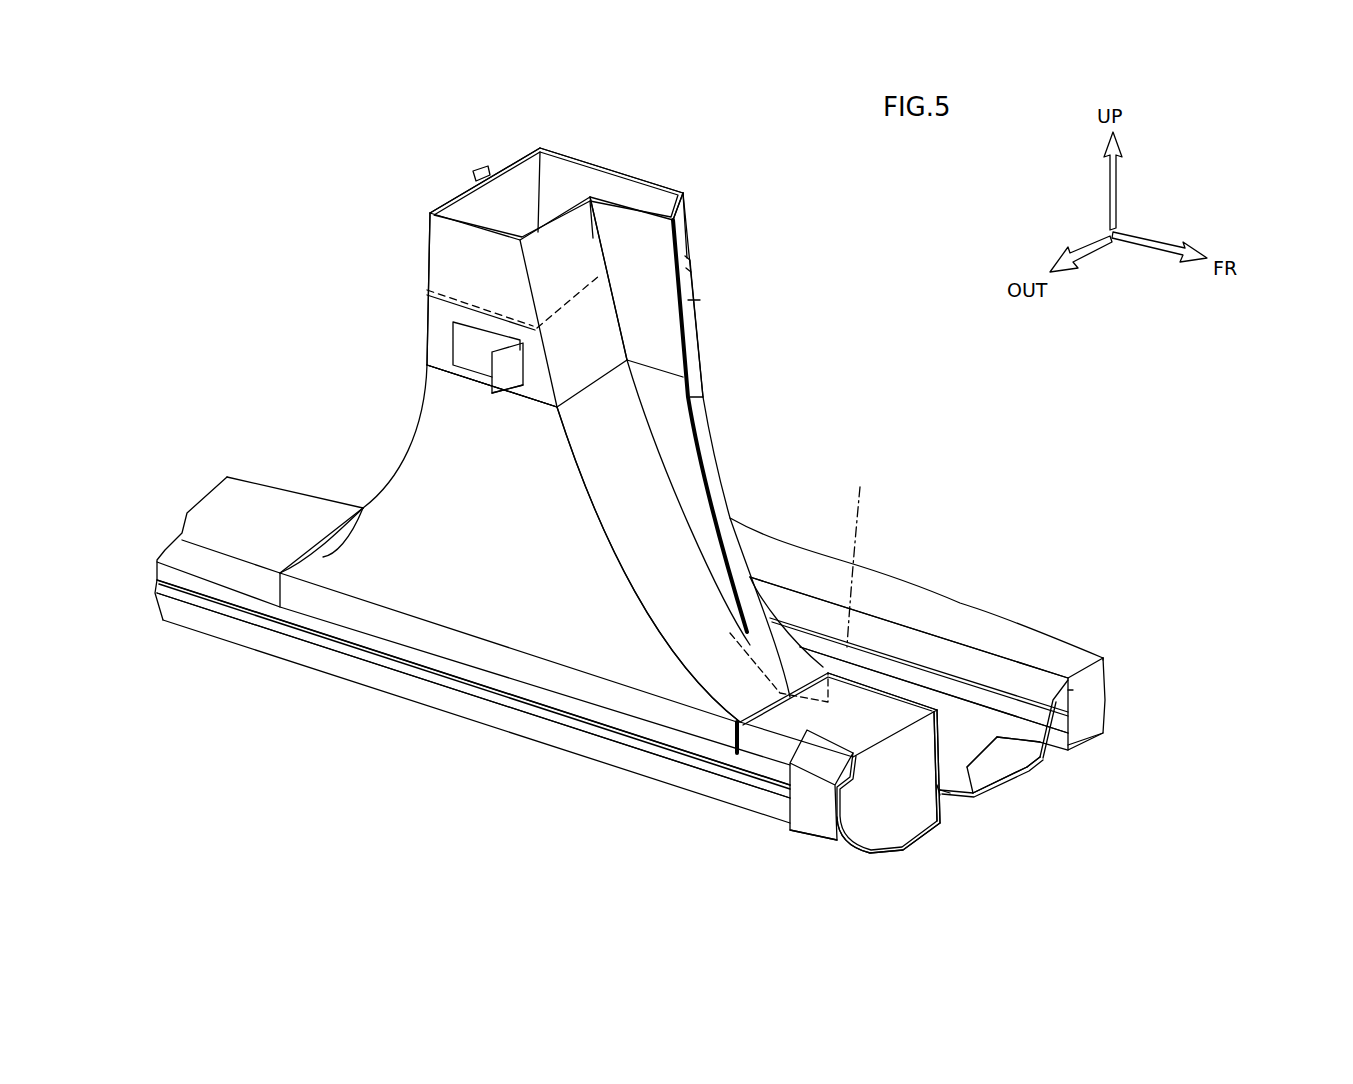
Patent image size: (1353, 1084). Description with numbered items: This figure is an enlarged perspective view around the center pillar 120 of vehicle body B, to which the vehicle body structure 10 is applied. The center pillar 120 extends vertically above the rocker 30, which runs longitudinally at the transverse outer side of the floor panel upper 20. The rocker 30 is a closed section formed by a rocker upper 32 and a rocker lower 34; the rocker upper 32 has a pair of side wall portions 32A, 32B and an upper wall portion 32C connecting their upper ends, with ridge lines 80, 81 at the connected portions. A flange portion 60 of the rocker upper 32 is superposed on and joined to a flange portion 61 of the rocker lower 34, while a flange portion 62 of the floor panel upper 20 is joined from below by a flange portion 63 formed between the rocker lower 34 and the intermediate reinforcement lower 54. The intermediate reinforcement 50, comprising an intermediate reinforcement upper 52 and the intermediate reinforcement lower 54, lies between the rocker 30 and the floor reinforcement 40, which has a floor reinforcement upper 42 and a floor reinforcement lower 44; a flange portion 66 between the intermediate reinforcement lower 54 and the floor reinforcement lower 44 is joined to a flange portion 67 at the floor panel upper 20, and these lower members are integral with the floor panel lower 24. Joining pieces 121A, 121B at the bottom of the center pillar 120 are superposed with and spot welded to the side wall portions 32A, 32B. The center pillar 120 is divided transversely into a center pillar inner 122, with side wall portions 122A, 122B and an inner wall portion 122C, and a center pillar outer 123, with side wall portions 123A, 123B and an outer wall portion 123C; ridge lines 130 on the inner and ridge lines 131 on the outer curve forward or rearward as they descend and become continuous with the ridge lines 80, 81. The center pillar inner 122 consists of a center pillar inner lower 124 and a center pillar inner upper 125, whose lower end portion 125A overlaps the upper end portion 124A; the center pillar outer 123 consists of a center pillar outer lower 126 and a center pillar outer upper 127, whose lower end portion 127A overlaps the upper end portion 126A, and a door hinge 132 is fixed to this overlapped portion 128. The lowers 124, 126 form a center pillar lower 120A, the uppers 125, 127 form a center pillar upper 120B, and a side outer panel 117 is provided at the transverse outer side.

The vehicle body structure 10 is at (992, 438).
The floor panel upper 20 is at (1016, 615).
The floor panel lower 24 is at (1010, 782).
The rocker 30 is at (668, 813).
The rocker upper 32 is at (763, 757).
The side wall portion 32A is at (990, 777).
The side wall portion 32B is at (775, 790).
The upper wall portion 32C is at (870, 693).
The rocker lower 34 is at (763, 813).
The floor reinforcement 40 is at (1213, 633).
The floor reinforcement upper 42 is at (1080, 653).
The floor reinforcement lower 44 is at (1103, 740).
The intermediate reinforcement 50 is at (1170, 773).
The intermediate reinforcement upper 52 is at (1040, 742).
The intermediate reinforcement lower 54 is at (1040, 767).
The flange portion 60 is at (590, 716).
The flange portion 61 is at (610, 740).
The flange portion 62 is at (947, 793).
The flange portion 63 is at (943, 793).
The flange portion 66 is at (1050, 723).
The flange portion 67 is at (1073, 690).
The ridge line 80 is at (920, 700).
The ridge line 81 is at (667, 727).
The side outer panel 117 is at (810, 817).
The center pillar 120 is at (610, 163).
The center pillar lower 120A is at (735, 428).
The center pillar upper 120B is at (722, 204).
The joining piece 121A is at (811, 581).
The joining piece 121B is at (607, 742).
The center pillar inner 122 is at (797, 228).
The side wall portion 122A is at (677, 208).
The side wall portion 122B is at (515, 170).
The inner wall portion 122C is at (547, 238).
The center pillar outer 123 is at (283, 243).
The side wall portion 123A is at (490, 172).
The side wall portion 123B is at (457, 193).
The outer wall portion 123C is at (447, 237).
The center pillar inner lower 124 is at (699, 345).
The upper end portion 124A is at (692, 310).
The center pillar inner upper 125 is at (688, 227).
The lower end portion 125A is at (686, 268).
The center pillar outer lower 126 is at (437, 417).
The upper end portion 126A is at (437, 352).
The center pillar outer upper 127 is at (427, 260).
The lower end portion 127A is at (445, 322).
The overlapped portion 128 is at (410, 308).
The ridge line 130 is at (363, 513).
The ridge line 131 is at (312, 525).
The door hinge 132 is at (510, 400).